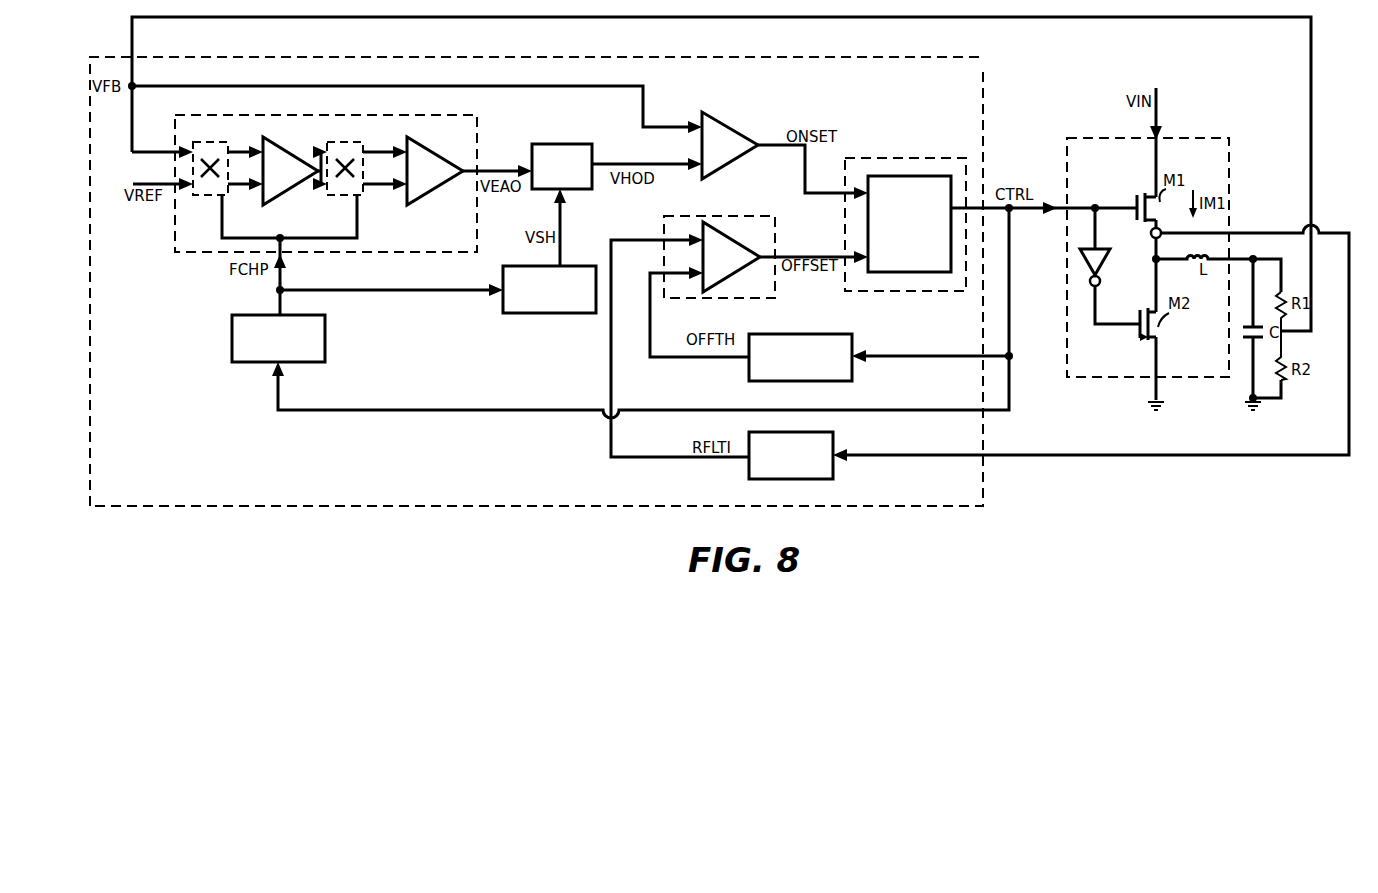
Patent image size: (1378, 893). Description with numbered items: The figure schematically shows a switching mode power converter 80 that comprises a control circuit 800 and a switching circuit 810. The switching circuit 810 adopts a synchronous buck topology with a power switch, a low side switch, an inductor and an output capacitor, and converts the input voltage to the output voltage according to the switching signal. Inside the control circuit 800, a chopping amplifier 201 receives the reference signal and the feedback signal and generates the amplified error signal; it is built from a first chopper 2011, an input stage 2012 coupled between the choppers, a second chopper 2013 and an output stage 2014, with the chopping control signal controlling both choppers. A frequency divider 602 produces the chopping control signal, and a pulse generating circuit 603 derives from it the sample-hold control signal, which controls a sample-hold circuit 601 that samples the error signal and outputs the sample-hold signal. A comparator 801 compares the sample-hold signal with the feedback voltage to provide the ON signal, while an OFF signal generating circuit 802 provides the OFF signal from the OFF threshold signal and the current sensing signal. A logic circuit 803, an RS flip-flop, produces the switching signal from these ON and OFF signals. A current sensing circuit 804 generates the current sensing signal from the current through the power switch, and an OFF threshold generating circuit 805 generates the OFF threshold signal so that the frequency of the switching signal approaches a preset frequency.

The switching mode power converter 80 is at (1327, 90).
The control circuit 800 is at (983, 100).
The switching circuit 810 is at (1229, 150).
The chopping amplifier 201 is at (477, 135).
The first chopper 2011 is at (200, 195).
The input stage 2012 is at (272, 205).
The second chopper 2013 is at (335, 195).
The output stage 2014 is at (420, 195).
The sample-hold circuit 601 is at (575, 143).
The frequency divider 602 is at (325, 328).
The pulse generating circuit 603 is at (532, 313).
The comparator 801 is at (730, 127).
The OFF signal generating circuit 802 is at (775, 225).
The logic circuit 803 is at (866, 291).
The current sensing circuit 804 is at (782, 480).
The OFF threshold generating circuit 805 is at (785, 382).